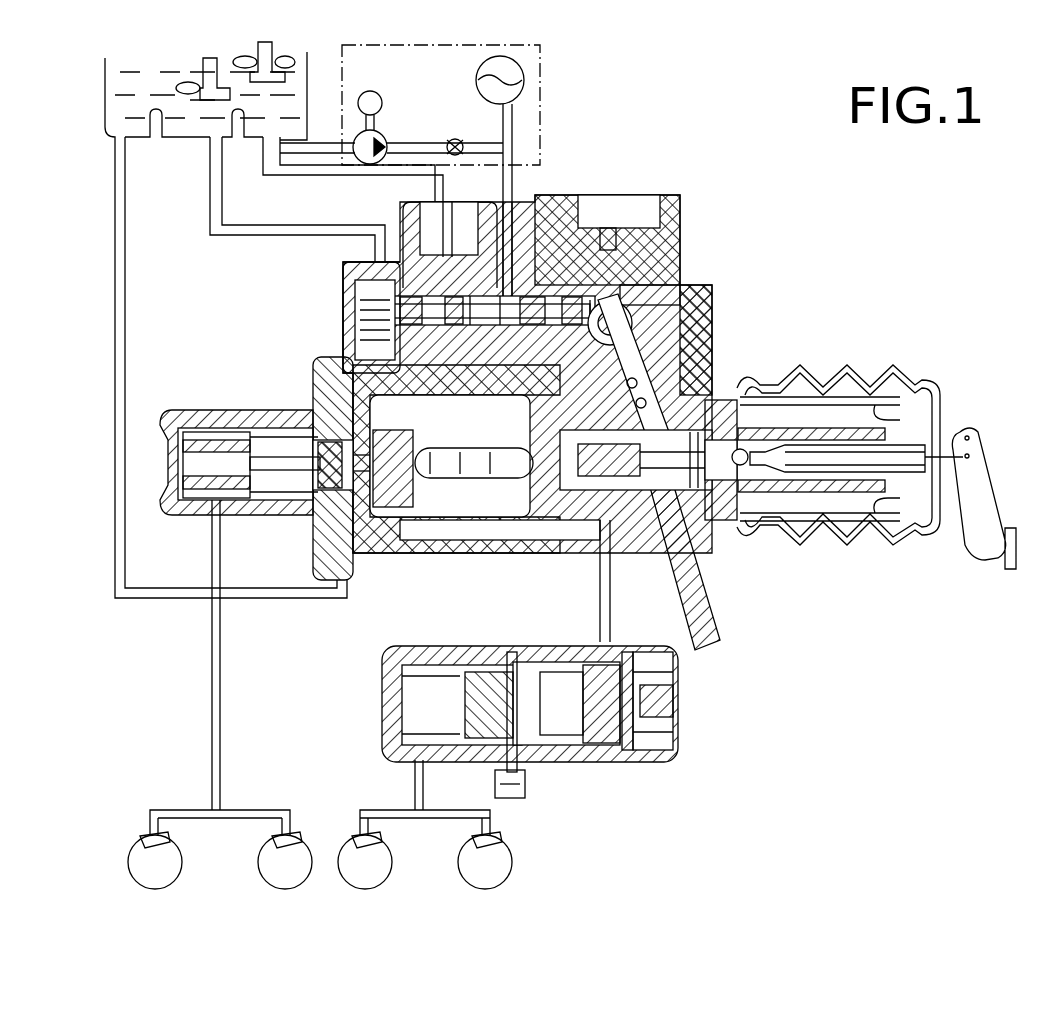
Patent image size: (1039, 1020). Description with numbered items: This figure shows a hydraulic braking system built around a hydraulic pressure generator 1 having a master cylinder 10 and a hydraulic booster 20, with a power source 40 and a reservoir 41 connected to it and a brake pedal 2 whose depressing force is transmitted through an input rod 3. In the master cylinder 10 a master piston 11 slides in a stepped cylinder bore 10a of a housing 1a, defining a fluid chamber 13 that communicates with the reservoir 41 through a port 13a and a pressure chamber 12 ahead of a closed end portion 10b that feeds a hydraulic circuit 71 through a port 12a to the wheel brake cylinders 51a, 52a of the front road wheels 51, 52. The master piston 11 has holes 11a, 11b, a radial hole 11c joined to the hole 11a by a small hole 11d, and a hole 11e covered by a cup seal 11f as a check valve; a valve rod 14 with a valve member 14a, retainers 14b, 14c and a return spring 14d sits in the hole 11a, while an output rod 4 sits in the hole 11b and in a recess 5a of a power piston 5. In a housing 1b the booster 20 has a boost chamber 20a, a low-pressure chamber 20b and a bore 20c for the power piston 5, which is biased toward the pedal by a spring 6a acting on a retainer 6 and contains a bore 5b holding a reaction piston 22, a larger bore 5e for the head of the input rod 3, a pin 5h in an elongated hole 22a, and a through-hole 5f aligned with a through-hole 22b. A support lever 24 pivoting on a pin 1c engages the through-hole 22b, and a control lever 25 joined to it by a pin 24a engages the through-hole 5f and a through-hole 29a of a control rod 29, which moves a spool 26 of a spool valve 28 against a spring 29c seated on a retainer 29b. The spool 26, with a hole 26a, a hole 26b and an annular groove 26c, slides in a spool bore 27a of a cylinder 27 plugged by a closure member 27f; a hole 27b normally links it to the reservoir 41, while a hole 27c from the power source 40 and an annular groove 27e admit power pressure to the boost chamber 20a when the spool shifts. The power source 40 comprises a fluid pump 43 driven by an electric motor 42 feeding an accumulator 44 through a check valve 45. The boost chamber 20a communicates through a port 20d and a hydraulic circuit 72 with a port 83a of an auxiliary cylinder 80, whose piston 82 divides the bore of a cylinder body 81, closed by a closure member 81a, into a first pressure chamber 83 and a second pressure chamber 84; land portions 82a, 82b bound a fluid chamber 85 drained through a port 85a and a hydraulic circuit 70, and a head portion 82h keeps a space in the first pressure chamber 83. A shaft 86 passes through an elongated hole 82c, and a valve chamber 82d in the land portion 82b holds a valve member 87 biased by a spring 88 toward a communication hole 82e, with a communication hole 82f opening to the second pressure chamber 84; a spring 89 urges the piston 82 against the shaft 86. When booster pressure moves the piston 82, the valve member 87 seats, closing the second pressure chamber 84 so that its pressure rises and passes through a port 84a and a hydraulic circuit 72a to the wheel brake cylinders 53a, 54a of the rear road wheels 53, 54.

The hydraulic pressure generator 1 is at (812, 370).
The housing 1a is at (168, 412).
The housing 1b is at (685, 200).
The pin 1c is at (720, 305).
The brake pedal 2 is at (1005, 565).
The input rod 3 is at (905, 478).
The output rod 4 is at (460, 448).
The power piston 5 is at (565, 455).
The recess 5a is at (495, 525).
The bore 5b is at (610, 470).
The bore 5e is at (805, 478).
The through-hole 5f is at (720, 520).
The pin 5h is at (640, 520).
The retainer 6 is at (890, 528).
The spring 6a is at (830, 497).
The master cylinder 10 is at (200, 410).
The cylinder bore 10a is at (185, 435).
The closed end portion 10b is at (185, 505).
The master piston 11 is at (405, 510).
The hole 11a is at (335, 510).
The hole 11b is at (435, 478).
The hole 11c is at (390, 545).
The small hole 11d is at (350, 545).
The hole 11e is at (340, 400).
The cup seal 11f is at (340, 440).
The pressure chamber 12 is at (250, 500).
The port 12a is at (215, 520).
The fluid chamber 13 is at (350, 420).
The port 13a is at (355, 275).
The valve rod 14 is at (270, 480).
The valve member 14a is at (310, 490).
The retainer 14b is at (225, 440).
The retainer 14c is at (325, 445).
The return spring 14d is at (250, 450).
The hydraulic booster 20 is at (700, 220).
The boost chamber 20a is at (640, 322).
The low-pressure chamber 20b is at (460, 540).
The bore 20c is at (545, 530).
The port 20d is at (612, 553).
The reaction piston 22 is at (650, 510).
The elongated hole 22a is at (650, 560).
The through-hole 22b is at (705, 640).
The support lever 24 is at (665, 370).
The pin 24a is at (650, 390).
The control lever 25 is at (665, 445).
The spool 26 is at (410, 262).
The hole 26a is at (565, 290).
The hole 26b is at (555, 285).
The annular groove 26c is at (545, 280).
The cylinder 27 is at (385, 262).
The spool bore 27a is at (375, 235).
The hole 27b is at (440, 228).
The hole 27c is at (450, 230).
The annular groove 27e is at (510, 240).
The closure member 27f is at (350, 295).
The spool valve 28 is at (358, 315).
The control rod 29 is at (680, 300).
The through-hole 29a is at (690, 270).
The retainer 29b is at (600, 215).
The spring 29c is at (580, 295).
The power source 40 is at (485, 172).
The reservoir 41 is at (188, 150).
The electric motor 42 is at (370, 91).
The fluid pump 43 is at (382, 133).
The accumulator 44 is at (480, 75).
The check valve 45 is at (454, 138).
The front road wheel 51 is at (132, 862).
The wheel brake cylinder 51a is at (160, 838).
The front road wheel 52 is at (262, 862).
The wheel brake cylinder 52a is at (280, 838).
The rear road wheel 53 is at (390, 862).
The wheel brake cylinder 53a is at (368, 838).
The rear road wheel 54 is at (512, 862).
The wheel brake cylinder 54a is at (478, 838).
The hydraulic circuit 70 is at (290, 598).
The hydraulic circuit 71 is at (212, 645).
The hydraulic circuit 72 is at (610, 600).
The hydraulic circuit 72a is at (415, 790).
The auxiliary cylinder 80 is at (688, 700).
The cylinder body 81 is at (680, 753).
The closure member 81a is at (670, 725).
The piston 82 is at (570, 760).
The land portion 82a is at (600, 760).
The land portion 82b is at (492, 660).
The elongated hole 82c is at (555, 740).
The valve chamber 82d is at (470, 680).
The communication hole 82e is at (480, 665).
The communication hole 82f is at (465, 710).
The head portion 82h is at (595, 742).
The first pressure chamber 83 is at (665, 690).
The port 83a is at (680, 660).
The second pressure chamber 84 is at (415, 716).
The port 84a is at (395, 750).
The fluid chamber 85 is at (525, 660).
The port 85a is at (535, 665).
The shaft 86 is at (509, 798).
The valve member 87 is at (500, 760).
The spring 88 is at (465, 742).
The spring 89 is at (405, 678).